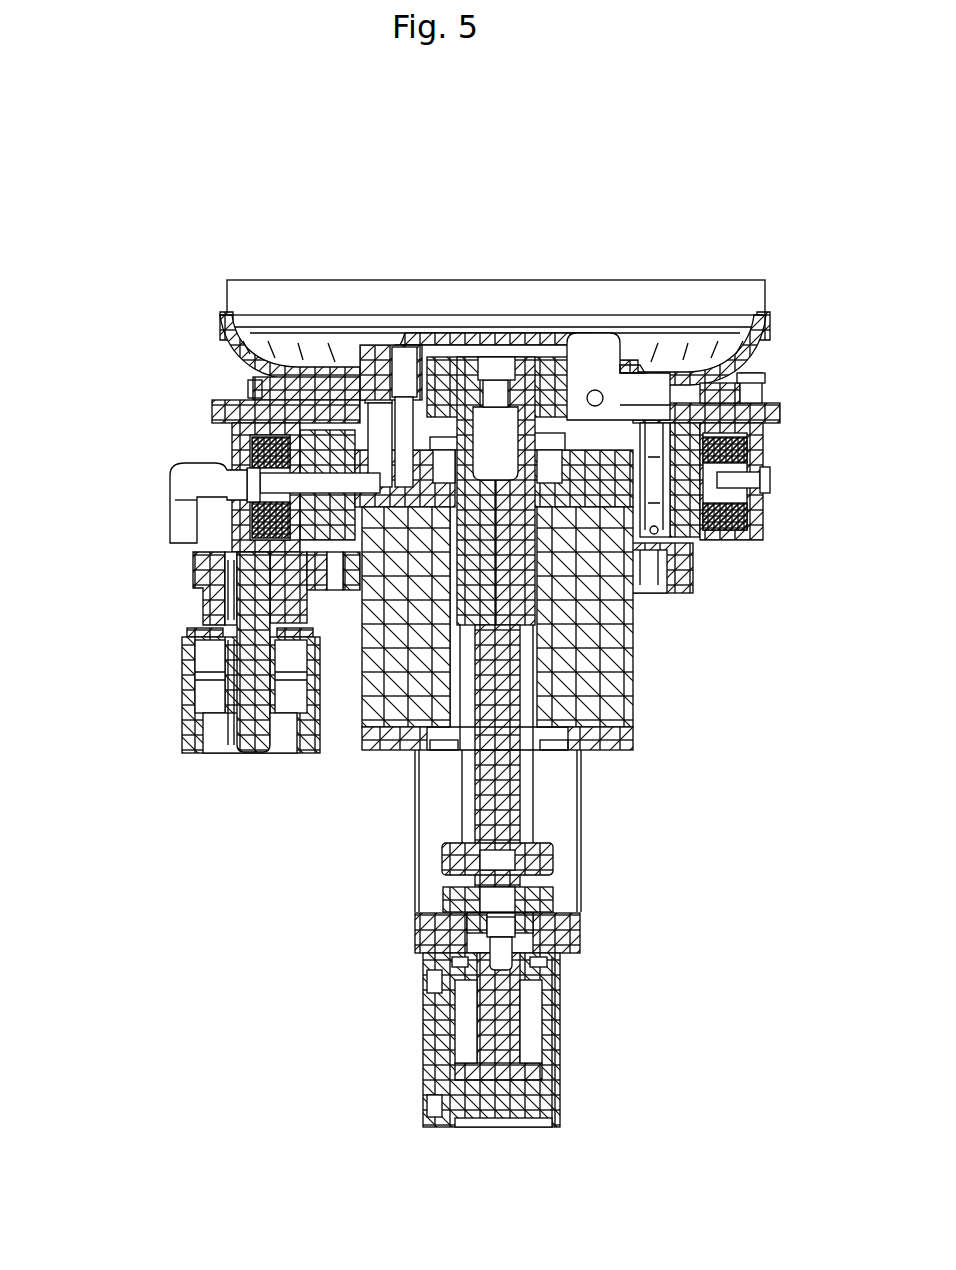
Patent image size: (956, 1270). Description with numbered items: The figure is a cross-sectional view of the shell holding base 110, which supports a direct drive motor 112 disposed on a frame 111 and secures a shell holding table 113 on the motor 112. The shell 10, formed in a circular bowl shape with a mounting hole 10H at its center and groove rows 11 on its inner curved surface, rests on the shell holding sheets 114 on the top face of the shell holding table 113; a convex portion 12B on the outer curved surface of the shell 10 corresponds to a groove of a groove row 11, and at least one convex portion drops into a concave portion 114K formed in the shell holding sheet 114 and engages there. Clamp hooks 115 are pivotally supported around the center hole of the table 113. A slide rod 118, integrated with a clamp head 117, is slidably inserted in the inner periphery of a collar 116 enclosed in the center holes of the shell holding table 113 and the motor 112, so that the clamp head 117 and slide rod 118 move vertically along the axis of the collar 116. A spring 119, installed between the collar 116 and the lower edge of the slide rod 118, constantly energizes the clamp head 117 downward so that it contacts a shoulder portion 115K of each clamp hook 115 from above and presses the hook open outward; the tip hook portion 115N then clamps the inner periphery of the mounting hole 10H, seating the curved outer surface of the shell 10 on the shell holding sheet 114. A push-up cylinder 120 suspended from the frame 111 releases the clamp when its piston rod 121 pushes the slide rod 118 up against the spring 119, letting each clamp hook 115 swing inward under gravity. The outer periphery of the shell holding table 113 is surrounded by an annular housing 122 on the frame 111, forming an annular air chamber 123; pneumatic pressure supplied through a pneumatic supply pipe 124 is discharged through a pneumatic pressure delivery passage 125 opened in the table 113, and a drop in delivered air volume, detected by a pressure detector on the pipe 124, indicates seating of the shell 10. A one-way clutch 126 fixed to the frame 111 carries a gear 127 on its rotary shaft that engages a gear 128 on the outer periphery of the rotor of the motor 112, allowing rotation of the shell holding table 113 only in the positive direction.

The shell holding base 110 is at (435, 645).
The shell 10 is at (741, 270).
The mounting hole 10H is at (600, 372).
The groove row 11 is at (703, 340).
The convex portion 12B is at (255, 392).
The frame 111 is at (625, 738).
The direct drive motor 112 is at (627, 668).
The shell holding table 113 is at (433, 418).
The shell holding sheet 114 is at (252, 402).
The concave portion 114K is at (287, 382).
The clamp hook 115 is at (583, 333).
The shoulder portion 115K is at (558, 352).
The tip hook portion 115N is at (637, 362).
The collar 116 is at (535, 585).
The clamp head 117 is at (520, 380).
The slide rod 118 is at (445, 855).
The spring 119 is at (490, 772).
The push-up cylinder 120 is at (432, 1033).
The piston rod 121 is at (445, 893).
The annular housing 122 is at (232, 438).
The annular air chamber 123 is at (248, 480).
The pneumatic supply pipe 124 is at (185, 484).
The pneumatic pressure delivery passage 125 is at (403, 347).
The one-way clutch 126 is at (193, 632).
The gear 127 is at (192, 571).
The gear 128 is at (694, 568).